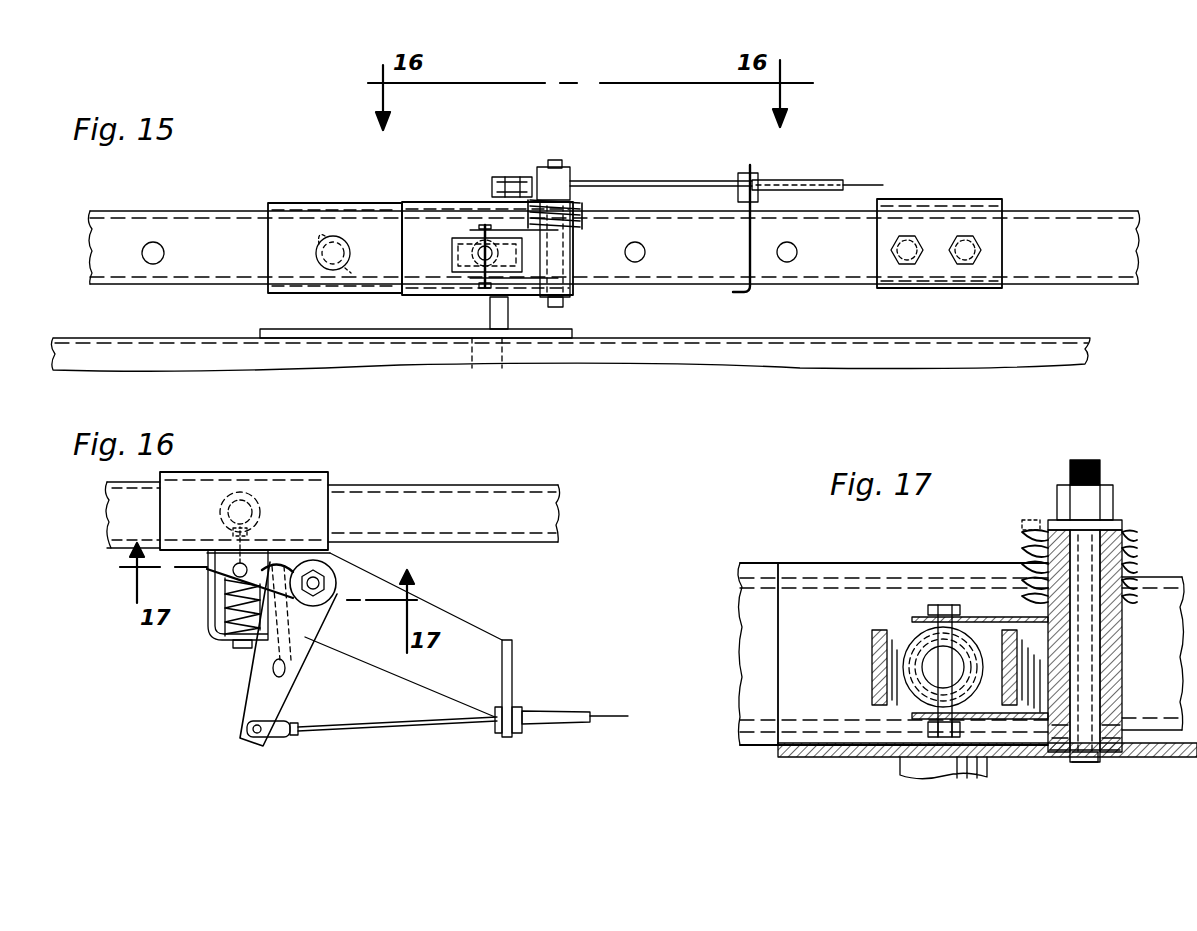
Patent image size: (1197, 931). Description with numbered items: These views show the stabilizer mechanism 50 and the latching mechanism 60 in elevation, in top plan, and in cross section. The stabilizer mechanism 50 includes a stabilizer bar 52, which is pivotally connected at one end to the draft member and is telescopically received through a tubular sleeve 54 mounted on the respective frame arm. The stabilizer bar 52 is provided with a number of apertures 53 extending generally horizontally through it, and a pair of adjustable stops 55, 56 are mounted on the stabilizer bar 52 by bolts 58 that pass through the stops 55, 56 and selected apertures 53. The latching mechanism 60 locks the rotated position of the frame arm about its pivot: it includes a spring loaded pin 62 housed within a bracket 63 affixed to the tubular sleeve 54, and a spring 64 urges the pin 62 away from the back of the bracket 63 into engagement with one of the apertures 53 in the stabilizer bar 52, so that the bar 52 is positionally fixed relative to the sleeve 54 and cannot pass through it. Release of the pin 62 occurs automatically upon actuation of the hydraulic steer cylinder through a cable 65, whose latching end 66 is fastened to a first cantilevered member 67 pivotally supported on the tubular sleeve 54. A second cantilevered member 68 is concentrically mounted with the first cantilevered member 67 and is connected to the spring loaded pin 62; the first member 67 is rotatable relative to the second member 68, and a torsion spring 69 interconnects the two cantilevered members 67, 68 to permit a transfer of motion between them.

In FIG. 15, the stabilizer mechanism 50 is at (803, 140).
In FIG. 15, the stabilizer bar 52 is at (1067, 220).
In FIG. 16, the stabilizer bar 52 is at (438, 498).
In FIG. 15, the apertures 53 is at (153, 264).
In FIG. 15, the tubular sleeve 54 is at (420, 202).
In FIG. 16, the tubular sleeve 54 is at (273, 472).
In FIG. 15, the adjustable stop 55 is at (925, 199).
In FIG. 15, the adjustable stop 56 is at (293, 202).
In FIG. 16, the adjustable stop 56 is at (118, 550).
In FIG. 15, the bolts 58 is at (316, 252).
In FIG. 15, the latching mechanism 60 is at (570, 135).
In FIG. 16, the latching mechanism 60 is at (212, 750).
In FIG. 15, the spring loaded pin 62 is at (478, 257).
In FIG. 16, the spring loaded pin 62 is at (233, 653).
In FIG. 17, the spring loaded pin 62 is at (905, 647).
In FIG. 15, the bracket 63 is at (452, 242).
In FIG. 16, the bracket 63 is at (217, 640).
In FIG. 17, the bracket 63 is at (872, 665).
In FIG. 16, the spring 64 is at (227, 607).
In FIG. 17, the spring 64 is at (923, 660).
In FIG. 15, the cable 65 is at (825, 180).
In FIG. 16, the cable 65 is at (560, 722).
In FIG. 15, the latching end 66 is at (612, 183).
In FIG. 16, the latching end 66 is at (350, 727).
In FIG. 15, the first cantilevered member 67 is at (490, 186).
In FIG. 16, the first cantilevered member 67 is at (247, 735).
In FIG. 17, the first cantilevered member 67 is at (1022, 533).
In FIG. 15, the second cantilevered member 68 is at (520, 278).
In FIG. 16, the second cantilevered member 68 is at (292, 560).
In FIG. 17, the second cantilevered member 68 is at (982, 617).
In FIG. 15, the torsion spring 69 is at (575, 218).
In FIG. 16, the torsion spring 69 is at (284, 672).
In FIG. 17, the torsion spring 69 is at (1130, 577).